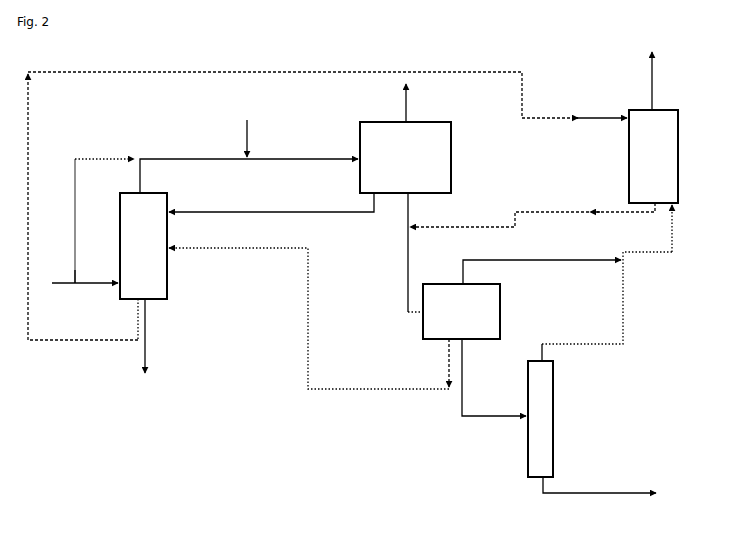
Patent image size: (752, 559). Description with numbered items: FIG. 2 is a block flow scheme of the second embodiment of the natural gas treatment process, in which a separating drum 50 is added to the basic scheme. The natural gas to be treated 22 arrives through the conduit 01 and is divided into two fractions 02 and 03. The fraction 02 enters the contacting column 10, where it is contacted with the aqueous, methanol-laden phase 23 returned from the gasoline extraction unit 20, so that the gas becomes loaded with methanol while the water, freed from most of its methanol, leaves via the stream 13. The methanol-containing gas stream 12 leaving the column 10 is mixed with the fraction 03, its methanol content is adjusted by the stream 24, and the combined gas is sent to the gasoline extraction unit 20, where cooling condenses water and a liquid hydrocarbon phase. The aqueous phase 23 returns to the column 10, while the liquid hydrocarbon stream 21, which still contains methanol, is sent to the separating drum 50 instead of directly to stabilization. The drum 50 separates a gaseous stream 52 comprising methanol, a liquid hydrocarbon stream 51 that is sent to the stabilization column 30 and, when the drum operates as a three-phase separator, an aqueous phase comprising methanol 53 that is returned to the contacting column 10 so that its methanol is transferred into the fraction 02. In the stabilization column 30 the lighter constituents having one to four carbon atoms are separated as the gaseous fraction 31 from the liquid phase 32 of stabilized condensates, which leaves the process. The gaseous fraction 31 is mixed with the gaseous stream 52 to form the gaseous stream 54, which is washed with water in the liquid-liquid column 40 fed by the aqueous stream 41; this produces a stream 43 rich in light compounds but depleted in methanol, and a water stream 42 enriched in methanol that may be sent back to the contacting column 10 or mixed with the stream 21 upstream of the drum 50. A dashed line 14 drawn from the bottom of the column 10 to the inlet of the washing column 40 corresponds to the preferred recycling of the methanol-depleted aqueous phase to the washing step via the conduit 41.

The contacting column 10 is at (118, 229).
The gasoline extraction unit 20 is at (452, 131).
The stabilization column 30 is at (527, 449).
The liquid-liquid washing column 40 is at (660, 111).
The separating drum 50 is at (432, 342).
The conduit 01 is at (68, 281).
The fraction of natural gas to be treated 02 is at (109, 280).
The stream of gas to be treated 03 is at (78, 156).
The stream of gas to be treated comprising methanol 12 is at (142, 181).
The methanol-depleted aqueous phase stream 13 is at (146, 352).
The recycle stream from first unit 14 is at (60, 339).
The liquid stream of hydrocarbons 21 is at (410, 213).
The natural gas to be treated 22 is at (404, 103).
The aqueous methanol-laden phase 23 is at (301, 207).
The methanol adjustment stream 24 is at (244, 127).
The gaseous fraction from the stabilization step 31 is at (624, 309).
The stabilized liquid hydrocarbon phase 32 is at (636, 495).
The aqueous wash stream 41 is at (588, 115).
The methanol-enriched water stream 42 is at (640, 214).
The methanol-depleted light gas stream 43 is at (653, 70).
The second liquid hydrocarbon stream 51 is at (480, 414).
The gaseous stream comprising methanol 52 is at (517, 262).
The aqueous phase comprising methanol 53 is at (236, 250).
The combined gaseous stream 54 is at (673, 225).